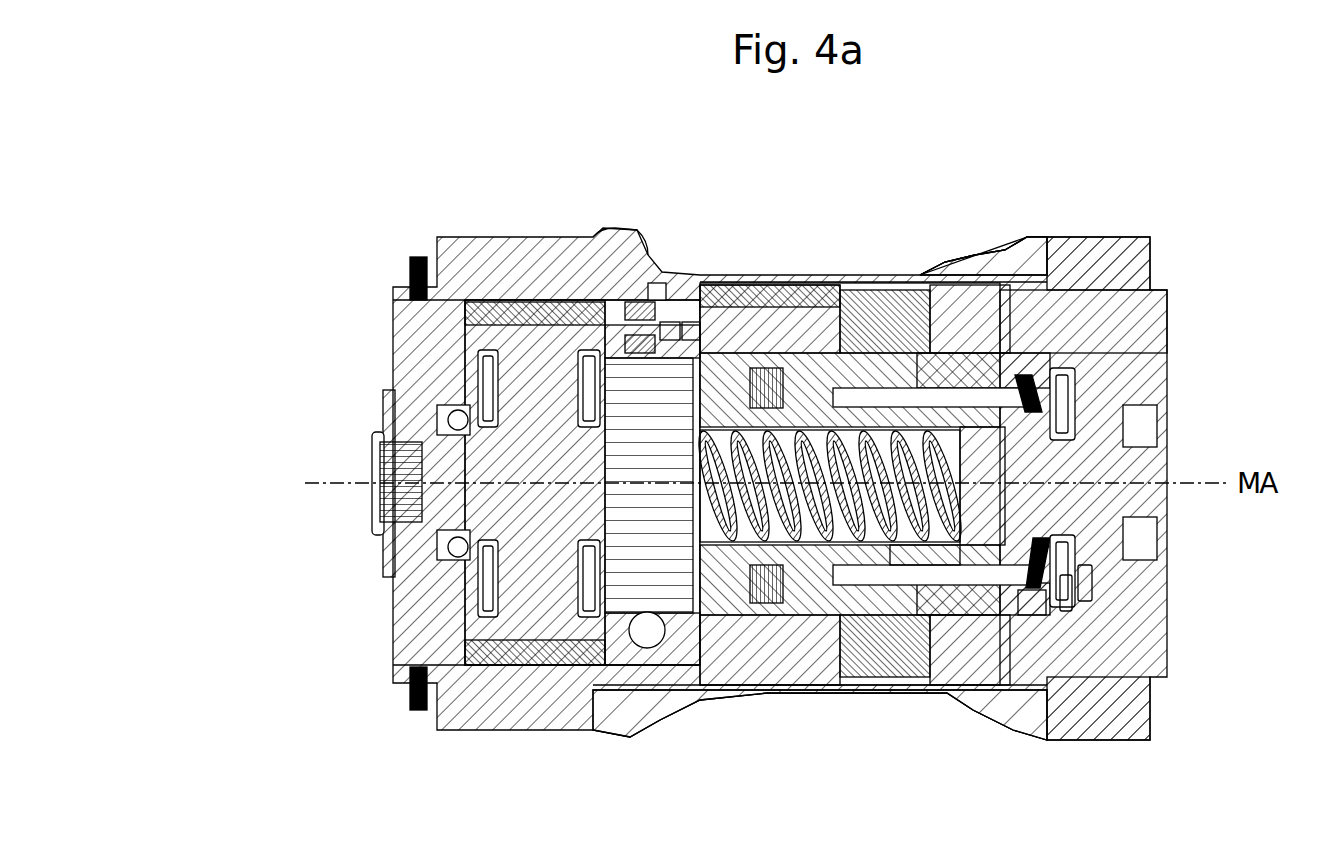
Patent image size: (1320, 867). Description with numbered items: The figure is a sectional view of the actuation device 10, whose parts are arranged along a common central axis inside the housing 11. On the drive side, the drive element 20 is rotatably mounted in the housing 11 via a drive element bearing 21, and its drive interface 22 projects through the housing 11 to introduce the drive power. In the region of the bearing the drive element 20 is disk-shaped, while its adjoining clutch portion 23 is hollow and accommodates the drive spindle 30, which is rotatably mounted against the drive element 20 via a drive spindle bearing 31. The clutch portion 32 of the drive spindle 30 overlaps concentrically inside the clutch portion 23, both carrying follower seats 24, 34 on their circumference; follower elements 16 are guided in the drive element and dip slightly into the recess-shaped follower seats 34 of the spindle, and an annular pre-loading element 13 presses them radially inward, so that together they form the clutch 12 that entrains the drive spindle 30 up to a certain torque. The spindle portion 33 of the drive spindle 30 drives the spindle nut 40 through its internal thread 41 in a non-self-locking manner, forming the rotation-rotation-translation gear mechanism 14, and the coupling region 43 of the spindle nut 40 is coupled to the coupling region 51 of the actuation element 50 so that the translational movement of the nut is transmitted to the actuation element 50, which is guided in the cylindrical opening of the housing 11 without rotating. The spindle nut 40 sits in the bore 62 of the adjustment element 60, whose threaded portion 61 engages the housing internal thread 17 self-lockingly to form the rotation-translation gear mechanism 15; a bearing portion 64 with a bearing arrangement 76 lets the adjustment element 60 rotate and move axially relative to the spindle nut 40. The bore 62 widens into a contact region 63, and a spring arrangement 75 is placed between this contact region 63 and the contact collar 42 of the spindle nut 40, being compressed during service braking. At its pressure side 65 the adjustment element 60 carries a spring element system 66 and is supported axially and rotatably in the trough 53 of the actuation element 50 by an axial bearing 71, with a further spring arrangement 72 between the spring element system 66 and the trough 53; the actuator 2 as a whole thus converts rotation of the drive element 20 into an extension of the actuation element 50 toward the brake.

The actuator 2 is at (617, 243).
The actuation device 10 is at (912, 180).
The housing 11 is at (412, 330).
The clutch 12 is at (650, 272).
The pre-loading element 13 is at (635, 342).
The rotation-rotation-translation gear mechanism 14 is at (847, 500).
The rotation-translation gear mechanism 15 is at (827, 245).
The follower elements 16 is at (637, 312).
The housing internal thread 17 is at (905, 315).
The drive element 20 is at (528, 605).
The drive element bearing 21 is at (435, 392).
The drive interface 22 is at (385, 483).
The clutch portion 23 is at (690, 333).
The follower seats 24 is at (670, 330).
The drive spindle 30 is at (700, 630).
The drive spindle bearing 31 is at (580, 587).
The clutch portion 32 is at (643, 497).
The spindle portion 33 is at (860, 575).
The follower seats 34 is at (648, 607).
The spindle nut 40 is at (987, 498).
The internal thread 41 is at (915, 533).
The contact collar 42 is at (743, 570).
The coupling region 43 is at (1107, 498).
The actuation element 50 is at (1055, 318).
The coupling region 51 is at (1107, 435).
The trough 53 is at (1085, 582).
The adjustment element 60 is at (948, 367).
The threaded portion 61 is at (810, 400).
The bore 62 is at (792, 298).
The contact region 63 is at (790, 588).
The bearing portion 64 is at (922, 360).
The pressure side 65 is at (1033, 602).
The spring element system 66 is at (1025, 383).
The axial bearing 71 is at (1072, 593).
The spring arrangement 72 is at (1040, 550).
The spring arrangement 75 is at (775, 382).
The bearing arrangement 76 is at (912, 397).